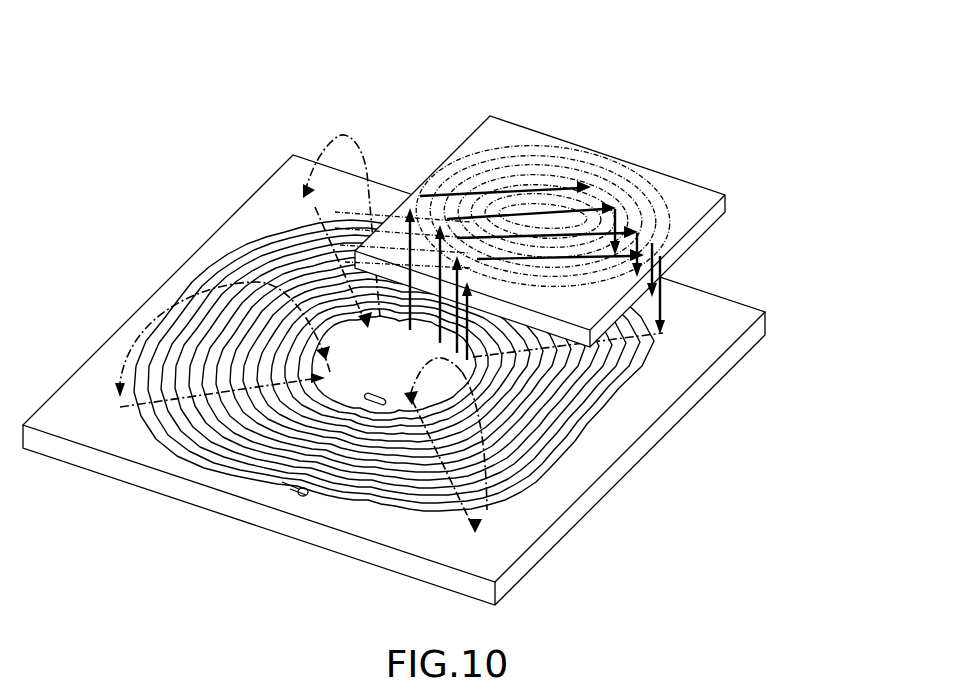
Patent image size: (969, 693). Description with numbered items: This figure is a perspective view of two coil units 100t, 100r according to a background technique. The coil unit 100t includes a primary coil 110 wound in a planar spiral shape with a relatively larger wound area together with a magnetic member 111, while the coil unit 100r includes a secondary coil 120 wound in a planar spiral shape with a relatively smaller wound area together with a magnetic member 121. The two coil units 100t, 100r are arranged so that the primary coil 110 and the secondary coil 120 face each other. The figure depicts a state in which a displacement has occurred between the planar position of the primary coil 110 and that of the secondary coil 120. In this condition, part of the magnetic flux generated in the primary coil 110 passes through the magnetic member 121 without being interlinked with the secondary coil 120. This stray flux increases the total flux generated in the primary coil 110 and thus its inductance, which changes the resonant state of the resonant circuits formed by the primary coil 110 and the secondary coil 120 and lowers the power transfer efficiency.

The coil unit 100t is at (450, 380).
The primary coil 110 is at (620, 395).
The magnetic member 111 is at (710, 370).
The coil unit 100r is at (530, 189).
The secondary coil 120 is at (680, 68).
The magnetic member 121 is at (677, 190).